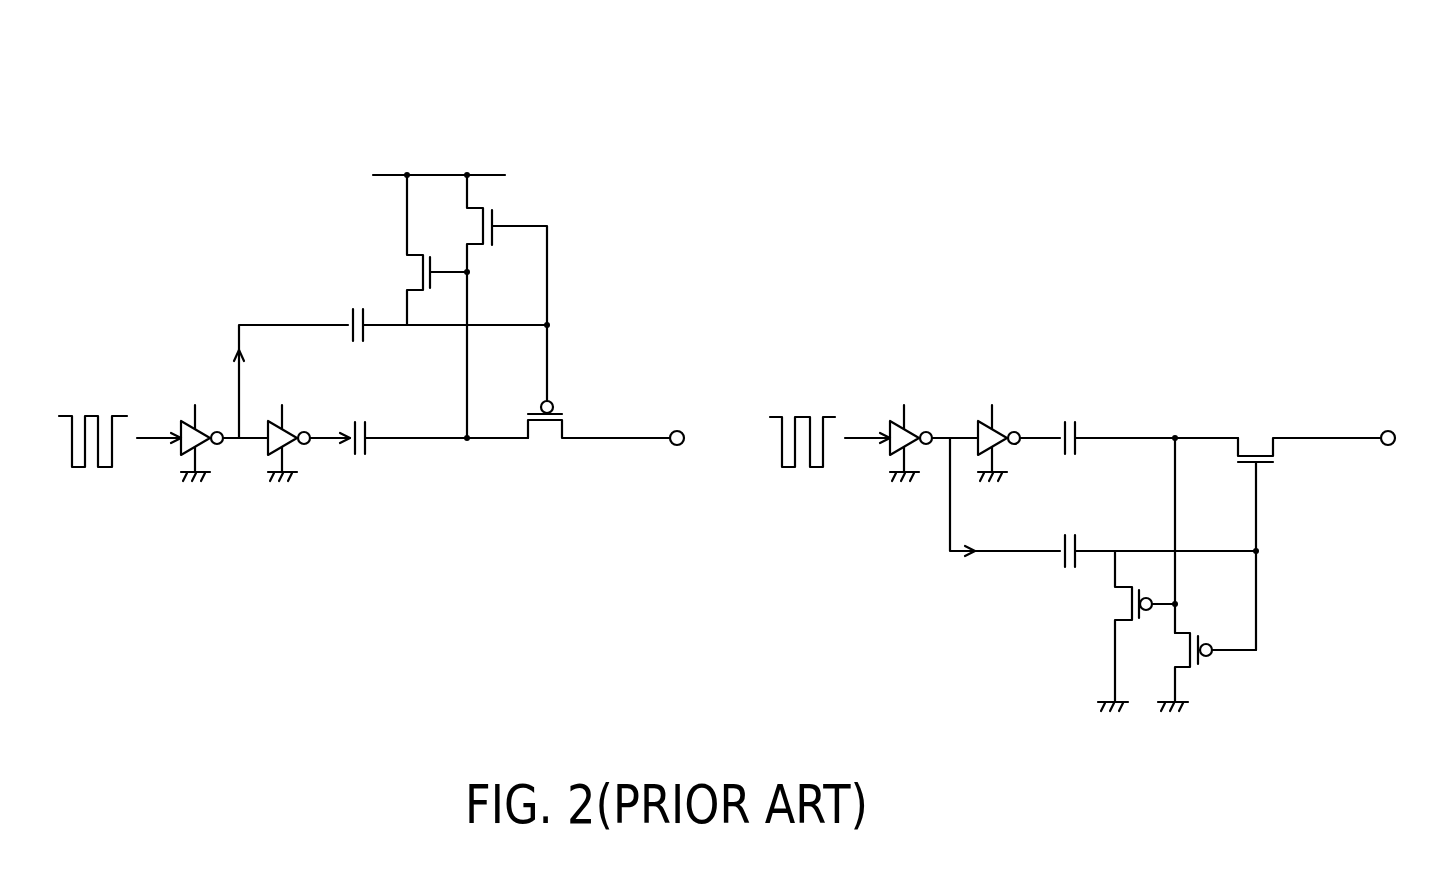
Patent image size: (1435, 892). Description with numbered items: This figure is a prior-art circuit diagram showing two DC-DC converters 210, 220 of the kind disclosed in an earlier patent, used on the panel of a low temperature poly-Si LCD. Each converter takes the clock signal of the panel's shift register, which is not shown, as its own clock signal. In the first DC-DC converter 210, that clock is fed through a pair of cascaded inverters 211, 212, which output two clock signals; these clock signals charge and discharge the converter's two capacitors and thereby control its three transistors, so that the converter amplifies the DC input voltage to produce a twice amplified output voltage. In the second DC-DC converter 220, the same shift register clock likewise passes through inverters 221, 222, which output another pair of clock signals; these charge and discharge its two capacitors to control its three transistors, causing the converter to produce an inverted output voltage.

The DC-DC converter 210 is at (381, 589).
The inverter 211 is at (180, 428).
The inverter 212 is at (280, 452).
The DC-DC converter 220 is at (978, 738).
The inverter 221 is at (890, 427).
The inverter 222 is at (978, 427).